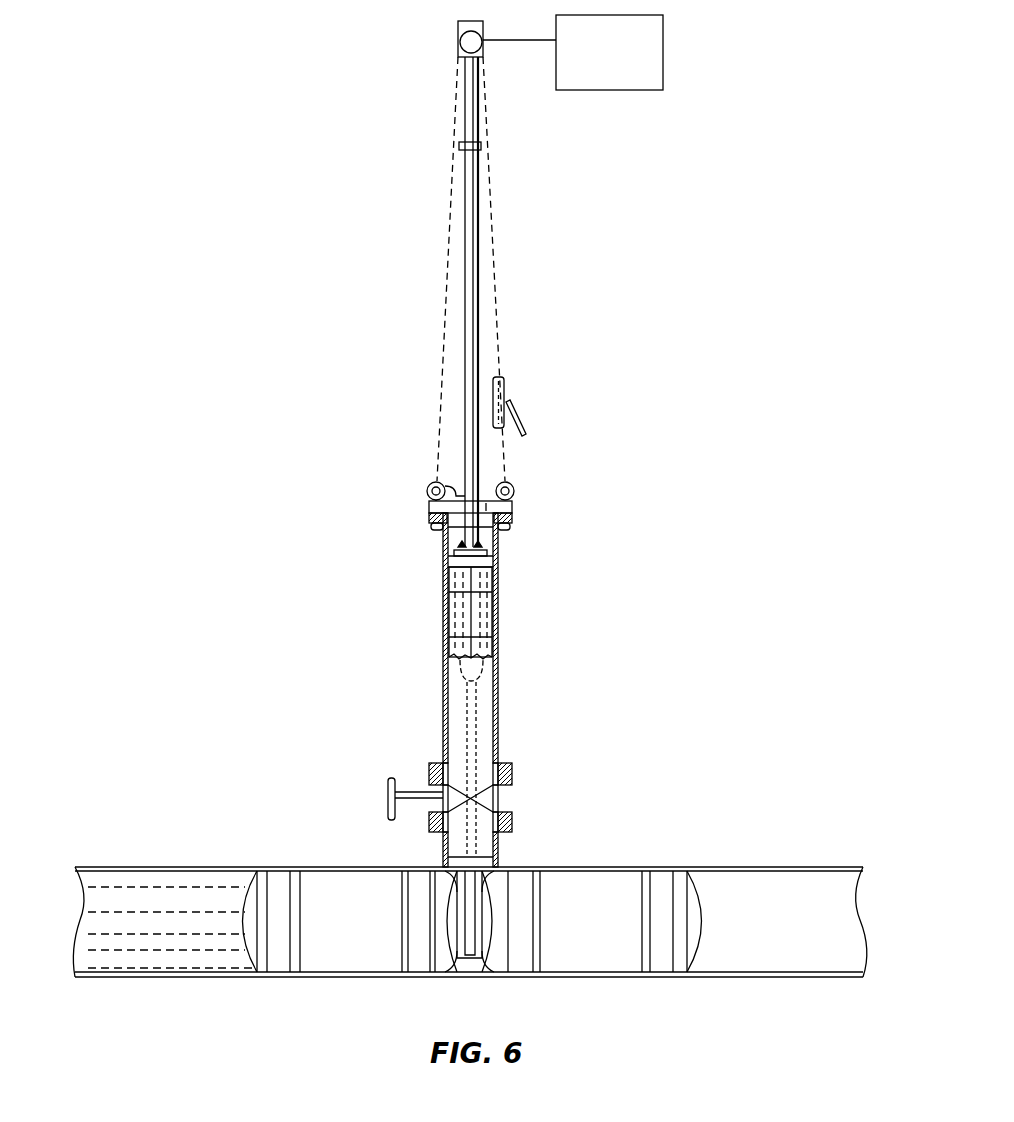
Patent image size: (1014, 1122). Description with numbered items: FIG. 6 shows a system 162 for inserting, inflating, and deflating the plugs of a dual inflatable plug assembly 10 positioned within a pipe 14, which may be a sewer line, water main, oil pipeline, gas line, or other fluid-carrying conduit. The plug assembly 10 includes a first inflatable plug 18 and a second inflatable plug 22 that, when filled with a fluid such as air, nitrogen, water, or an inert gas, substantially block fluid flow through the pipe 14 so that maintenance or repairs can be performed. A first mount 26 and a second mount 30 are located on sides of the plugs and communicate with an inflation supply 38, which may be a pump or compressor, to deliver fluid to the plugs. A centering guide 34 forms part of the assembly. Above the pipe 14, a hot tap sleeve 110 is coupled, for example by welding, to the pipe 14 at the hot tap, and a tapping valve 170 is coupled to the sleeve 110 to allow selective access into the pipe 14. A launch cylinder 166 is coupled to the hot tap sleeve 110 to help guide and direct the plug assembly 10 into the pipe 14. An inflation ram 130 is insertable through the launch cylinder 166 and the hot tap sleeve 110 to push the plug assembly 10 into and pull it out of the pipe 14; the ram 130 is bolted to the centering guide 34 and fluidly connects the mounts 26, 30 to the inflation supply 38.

The dual inflatable plug assembly 10 is at (565, 838).
The pipe 14 is at (822, 866).
The first inflatable plug 18 is at (325, 960).
The second inflatable plug 22 is at (617, 962).
The first mount 26 is at (465, 963).
The second mount 30 is at (477, 963).
The centering guide 34 is at (460, 860).
The inflation supply 38 is at (612, 92).
The hot tap sleeve 110 is at (513, 778).
The inflation ram 130 is at (477, 283).
The system 162 is at (335, 189).
The launch cylinder 166 is at (500, 676).
The tapping valve 170 is at (504, 800).